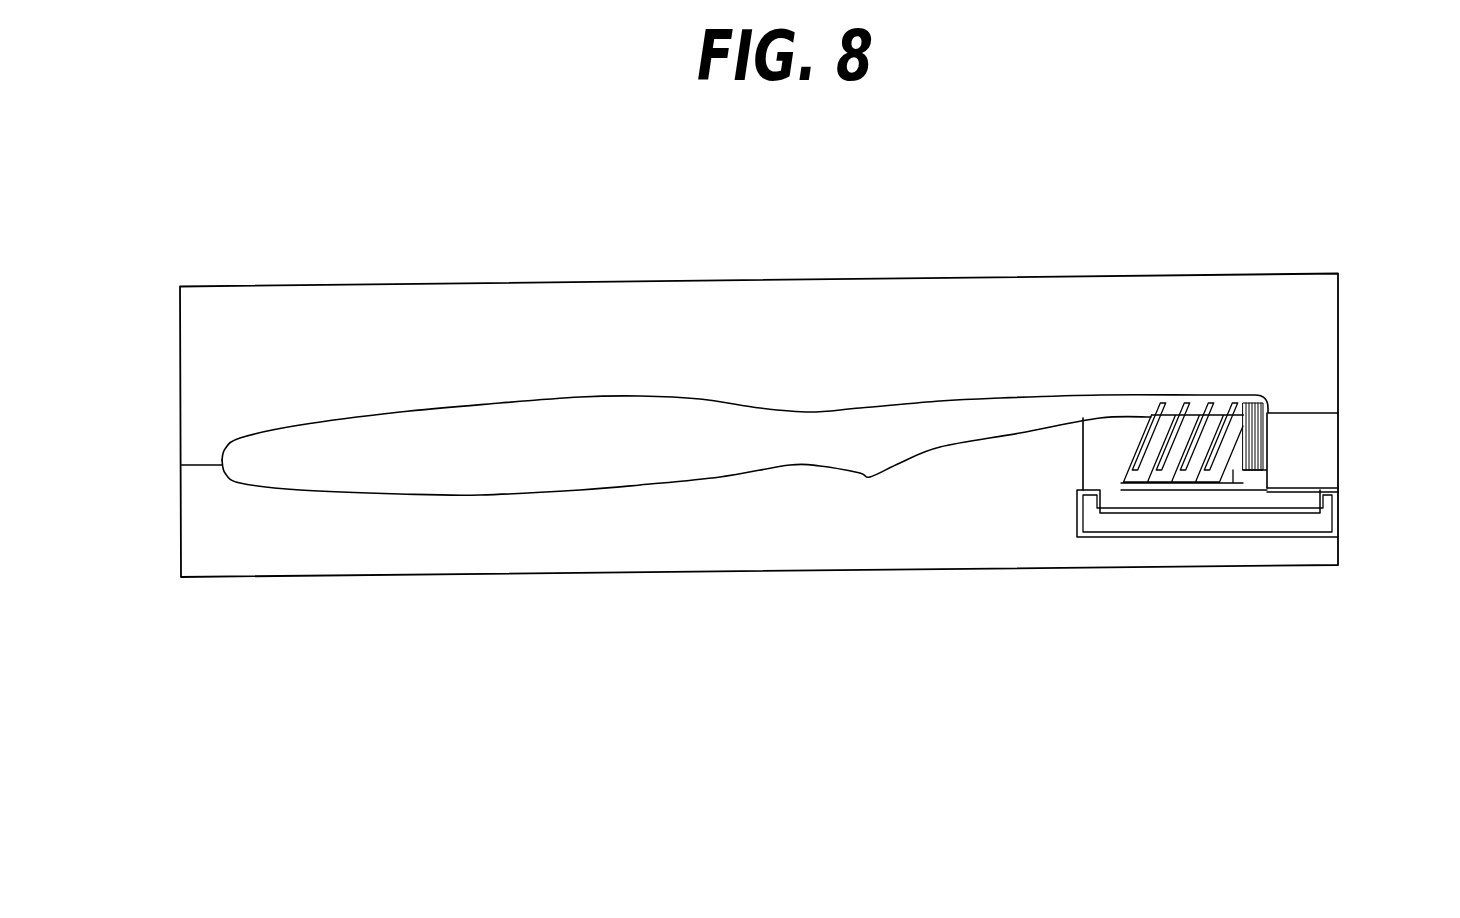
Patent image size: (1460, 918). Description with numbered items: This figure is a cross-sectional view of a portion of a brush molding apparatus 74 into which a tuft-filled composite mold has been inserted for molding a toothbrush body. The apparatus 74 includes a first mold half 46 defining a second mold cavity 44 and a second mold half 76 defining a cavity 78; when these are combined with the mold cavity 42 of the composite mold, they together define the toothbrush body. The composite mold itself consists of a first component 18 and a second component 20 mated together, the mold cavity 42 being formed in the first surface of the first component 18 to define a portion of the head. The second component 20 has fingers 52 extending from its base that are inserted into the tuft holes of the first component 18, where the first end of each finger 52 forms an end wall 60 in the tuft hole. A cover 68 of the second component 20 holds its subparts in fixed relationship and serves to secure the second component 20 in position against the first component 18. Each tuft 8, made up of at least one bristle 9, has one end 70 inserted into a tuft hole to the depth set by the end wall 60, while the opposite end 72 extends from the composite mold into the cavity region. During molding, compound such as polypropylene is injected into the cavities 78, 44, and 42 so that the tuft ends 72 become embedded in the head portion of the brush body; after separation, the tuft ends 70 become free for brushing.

The tuft 8 is at (1267, 433).
The bristle 9 is at (1255, 453).
The first component 18 is at (1092, 452).
The second component 20 is at (1173, 502).
The mold cavity 42 is at (1226, 400).
The second mold cavity 44 is at (1237, 400).
The first mold half 46 is at (1325, 322).
The finger 52 is at (1253, 483).
The end wall 60 is at (1242, 468).
The cover 68 is at (1330, 510).
The end of tuft 70 is at (1132, 462).
The opposite end of tuft 72 is at (1163, 408).
The brush molding apparatus 74 is at (918, 261).
The second mold half 76 is at (648, 538).
The cavity 78 is at (265, 472).